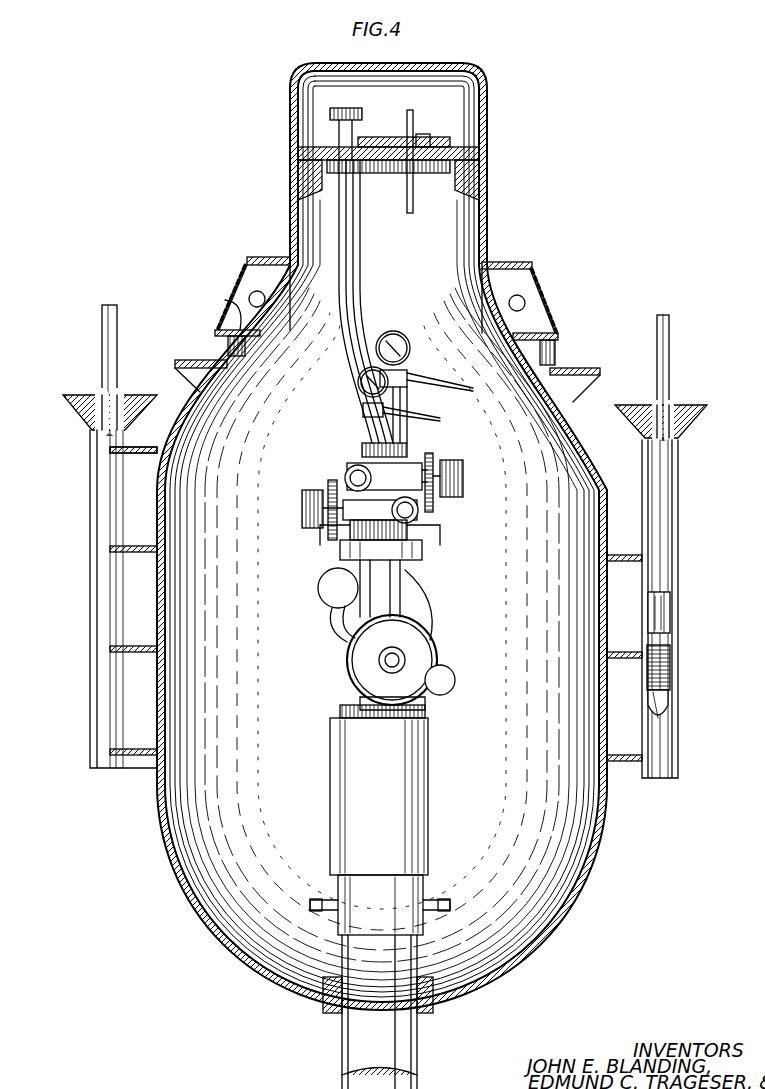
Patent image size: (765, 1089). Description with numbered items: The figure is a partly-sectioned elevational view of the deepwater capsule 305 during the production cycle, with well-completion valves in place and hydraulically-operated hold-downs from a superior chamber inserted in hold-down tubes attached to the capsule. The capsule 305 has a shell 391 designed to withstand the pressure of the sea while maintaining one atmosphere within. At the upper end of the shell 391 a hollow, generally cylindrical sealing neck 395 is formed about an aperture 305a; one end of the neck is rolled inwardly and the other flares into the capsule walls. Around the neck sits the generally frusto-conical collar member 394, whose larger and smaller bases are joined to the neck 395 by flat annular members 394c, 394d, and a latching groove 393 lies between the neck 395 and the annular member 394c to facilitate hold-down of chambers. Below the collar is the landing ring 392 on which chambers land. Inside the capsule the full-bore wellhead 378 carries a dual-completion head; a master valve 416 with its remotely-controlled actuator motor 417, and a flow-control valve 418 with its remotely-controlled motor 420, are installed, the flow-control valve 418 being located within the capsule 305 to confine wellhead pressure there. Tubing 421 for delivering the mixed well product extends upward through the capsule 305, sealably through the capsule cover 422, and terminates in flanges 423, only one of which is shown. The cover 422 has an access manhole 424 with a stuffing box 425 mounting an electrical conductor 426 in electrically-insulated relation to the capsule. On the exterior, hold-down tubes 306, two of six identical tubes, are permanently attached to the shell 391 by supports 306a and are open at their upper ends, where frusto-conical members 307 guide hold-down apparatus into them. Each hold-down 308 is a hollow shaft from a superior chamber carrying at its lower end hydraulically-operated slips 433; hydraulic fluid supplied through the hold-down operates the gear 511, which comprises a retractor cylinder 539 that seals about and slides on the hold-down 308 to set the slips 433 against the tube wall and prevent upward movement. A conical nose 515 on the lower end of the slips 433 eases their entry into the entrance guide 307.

The capsule 305 is at (538, 944).
The aperture 305a is at (330, 71).
The shell 391 is at (170, 862).
The sealing neck 395 is at (296, 167).
The capsule cover 422 is at (372, 162).
The flange 423 is at (346, 108).
The access manhole 424 is at (392, 146).
The stuffing box 425 is at (424, 134).
The electrical conductor 426 is at (413, 212).
The collar member 394 is at (240, 268).
The annular member 394c is at (228, 300).
The annular member 394d is at (516, 262).
The latching groove 393 is at (212, 344).
The landing ring 392 is at (178, 360).
The hold-down 308 is at (106, 334).
The frusto-conical member 307 is at (80, 410).
The holddown tube 306 is at (96, 714).
The support 306a is at (150, 450).
The tubing 421 is at (349, 373).
The flow-control valve 418 is at (410, 462).
The remotely-controlled motor 420 is at (301, 503).
The actuator motor 417 is at (318, 590).
The master valve 416 is at (400, 600).
The wellhead 378 is at (329, 805).
The gear 511 is at (679, 603).
The retractor cylinder 539 is at (672, 617).
The slips 433 is at (670, 662).
The conical nose 515 is at (662, 706).